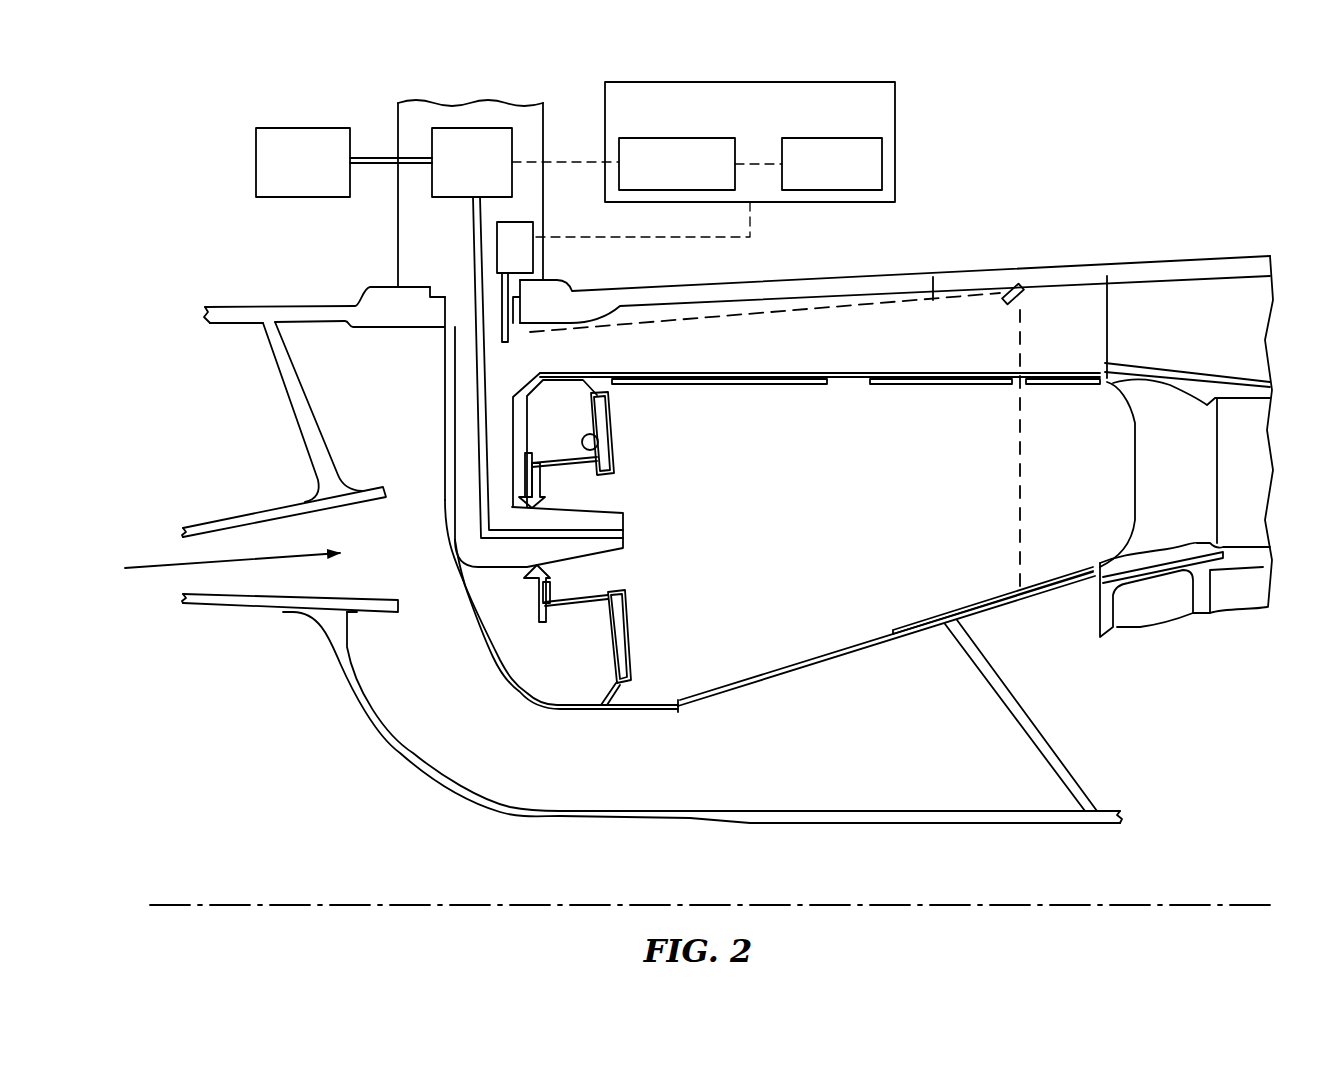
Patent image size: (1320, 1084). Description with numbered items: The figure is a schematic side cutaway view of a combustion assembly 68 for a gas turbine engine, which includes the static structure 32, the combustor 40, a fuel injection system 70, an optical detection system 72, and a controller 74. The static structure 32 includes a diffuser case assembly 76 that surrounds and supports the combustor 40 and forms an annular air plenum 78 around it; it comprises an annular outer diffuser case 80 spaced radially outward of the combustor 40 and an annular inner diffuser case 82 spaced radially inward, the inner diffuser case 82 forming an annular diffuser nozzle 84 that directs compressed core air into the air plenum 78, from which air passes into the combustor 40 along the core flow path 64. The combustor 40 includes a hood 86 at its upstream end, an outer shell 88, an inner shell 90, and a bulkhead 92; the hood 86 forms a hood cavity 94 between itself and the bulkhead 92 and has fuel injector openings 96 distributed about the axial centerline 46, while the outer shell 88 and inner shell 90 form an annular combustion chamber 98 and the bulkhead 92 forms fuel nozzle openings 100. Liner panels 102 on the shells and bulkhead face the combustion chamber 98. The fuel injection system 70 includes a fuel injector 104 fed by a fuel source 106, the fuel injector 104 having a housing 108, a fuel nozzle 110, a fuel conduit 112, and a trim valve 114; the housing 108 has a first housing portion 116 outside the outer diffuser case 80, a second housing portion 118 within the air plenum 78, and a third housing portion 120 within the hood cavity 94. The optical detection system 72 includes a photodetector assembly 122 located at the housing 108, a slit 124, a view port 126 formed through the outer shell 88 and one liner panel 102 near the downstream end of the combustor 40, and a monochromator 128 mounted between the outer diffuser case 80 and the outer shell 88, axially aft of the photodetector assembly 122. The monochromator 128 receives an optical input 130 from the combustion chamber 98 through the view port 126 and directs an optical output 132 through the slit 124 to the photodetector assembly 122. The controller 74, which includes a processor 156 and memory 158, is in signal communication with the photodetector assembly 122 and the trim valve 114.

The static structure 32 is at (1118, 246).
The combustor 40 is at (796, 690).
The axial centerline 46 is at (1265, 902).
The core flow path 64 is at (240, 560).
The combustion assembly 68 is at (1162, 108).
The fuel injection system 70 is at (305, 434).
The optical detection system 72 is at (771, 306).
The controller 74 is at (896, 97).
The diffuser case assembly 76 is at (318, 708).
The air plenum 78 is at (392, 567).
The outer diffuser case 80 is at (1041, 264).
The inner diffuser case 82 is at (899, 824).
The diffuser nozzle 84 is at (293, 605).
The hood 86 is at (490, 650).
The outer shell 88 is at (818, 373).
The inner shell 90 is at (740, 708).
The bulkhead 92 is at (600, 451).
The hood cavity 94 is at (491, 609).
The fuel injector opening 96 is at (451, 505).
The combustion chamber 98 is at (822, 521).
The fuel nozzle opening 100 is at (622, 572).
The liner panel 102 is at (616, 418).
The fuel injector 104 is at (375, 257).
The fuel source 106 is at (255, 167).
The housing 108 is at (442, 365).
The fuel nozzle 110 is at (616, 522).
The fuel conduit 112 is at (377, 157).
The trim valve 114 is at (470, 127).
The first housing portion 116 is at (397, 210).
The second housing portion 118 is at (444, 410).
The third housing portion 120 is at (546, 483).
The photodetector assembly 122 is at (540, 248).
The slit 124 is at (521, 339).
The view port 126 is at (1011, 392).
The monochromator 128 is at (1030, 302).
The optical input 130 is at (1021, 483).
The optical output 132 is at (934, 276).
The processor 156 is at (618, 150).
The memory 158 is at (883, 162).